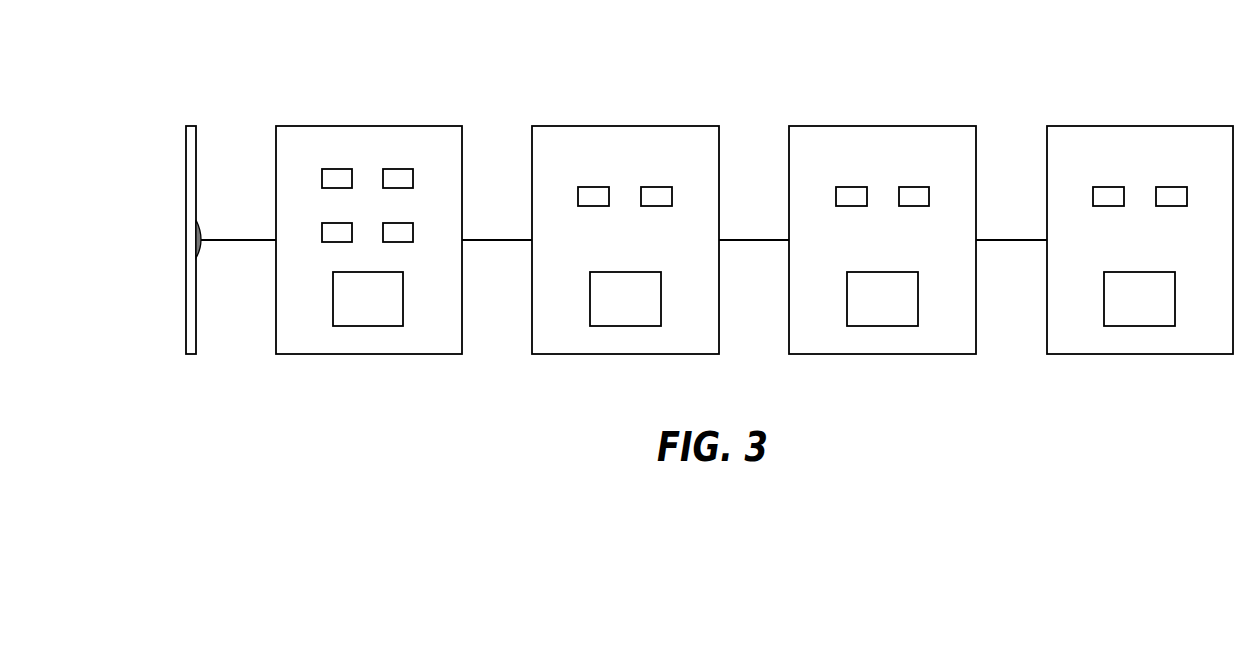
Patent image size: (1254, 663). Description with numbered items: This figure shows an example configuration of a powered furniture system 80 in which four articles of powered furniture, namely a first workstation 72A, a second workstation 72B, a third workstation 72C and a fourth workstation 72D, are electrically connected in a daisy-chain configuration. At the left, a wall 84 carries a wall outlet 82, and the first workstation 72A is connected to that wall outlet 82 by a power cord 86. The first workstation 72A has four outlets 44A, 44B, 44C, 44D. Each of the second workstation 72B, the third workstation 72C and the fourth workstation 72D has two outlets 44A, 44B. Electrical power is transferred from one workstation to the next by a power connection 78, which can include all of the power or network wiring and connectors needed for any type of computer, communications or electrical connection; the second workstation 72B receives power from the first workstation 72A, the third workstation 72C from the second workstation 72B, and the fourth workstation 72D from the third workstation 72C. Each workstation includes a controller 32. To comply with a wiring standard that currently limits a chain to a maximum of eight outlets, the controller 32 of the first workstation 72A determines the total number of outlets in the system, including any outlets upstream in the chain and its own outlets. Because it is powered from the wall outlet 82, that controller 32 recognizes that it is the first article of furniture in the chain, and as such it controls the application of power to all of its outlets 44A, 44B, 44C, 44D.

The powered furniture system 80 is at (255, 62).
The wall 84 is at (198, 173).
The wall outlet 82 is at (203, 252).
The power cord 86 is at (241, 238).
The first workstation 72A is at (368, 126).
The second workstation 72B is at (628, 126).
The third workstation 72C is at (886, 126).
The fourth workstation 72D is at (1143, 126).
The outlet 44A is at (336, 169).
The outlet 44B is at (398, 169).
The outlet 44C is at (336, 223).
The outlet 44D is at (398, 223).
The controller 32 is at (368, 272).
The power connection 78 is at (497, 238).